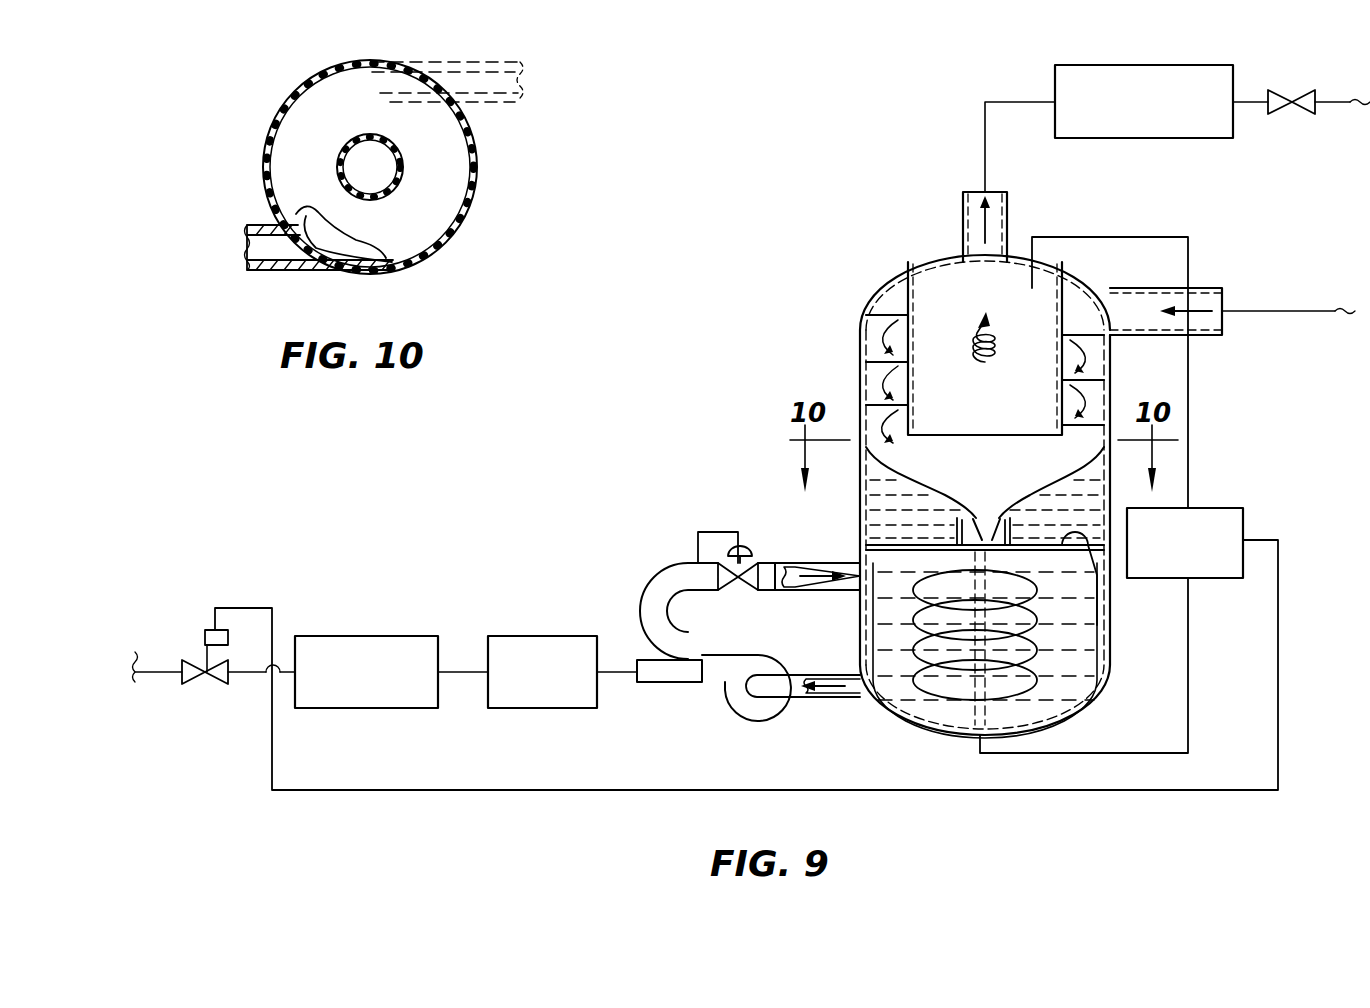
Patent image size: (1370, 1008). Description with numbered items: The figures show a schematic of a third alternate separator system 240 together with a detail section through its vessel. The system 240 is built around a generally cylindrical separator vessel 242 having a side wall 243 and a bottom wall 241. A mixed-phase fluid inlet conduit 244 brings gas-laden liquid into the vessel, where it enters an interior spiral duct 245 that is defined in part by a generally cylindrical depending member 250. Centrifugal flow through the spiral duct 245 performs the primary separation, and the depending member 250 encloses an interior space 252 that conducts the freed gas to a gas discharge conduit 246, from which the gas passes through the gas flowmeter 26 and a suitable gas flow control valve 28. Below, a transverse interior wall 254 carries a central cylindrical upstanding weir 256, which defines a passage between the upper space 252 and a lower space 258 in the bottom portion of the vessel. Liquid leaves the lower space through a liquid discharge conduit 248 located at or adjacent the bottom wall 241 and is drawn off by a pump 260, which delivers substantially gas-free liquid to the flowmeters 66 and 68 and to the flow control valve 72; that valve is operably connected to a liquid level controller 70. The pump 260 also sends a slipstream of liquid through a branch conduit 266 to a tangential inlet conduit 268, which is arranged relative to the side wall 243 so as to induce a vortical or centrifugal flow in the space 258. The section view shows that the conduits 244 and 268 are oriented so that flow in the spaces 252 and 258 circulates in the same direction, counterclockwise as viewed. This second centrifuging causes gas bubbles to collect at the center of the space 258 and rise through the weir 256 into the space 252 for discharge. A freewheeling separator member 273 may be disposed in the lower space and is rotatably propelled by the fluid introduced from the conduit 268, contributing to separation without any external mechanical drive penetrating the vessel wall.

In FIG. 9, the gas flowmeter 26 is at (1170, 140).
In FIG. 9, the gas flow control valve 28 is at (1290, 116).
In FIG. 9, the flowmeter 66 is at (540, 636).
In FIG. 9, the flowmeter 68 is at (366, 636).
In FIG. 9, the liquid level controller 70 is at (1246, 522).
In FIG. 9, the flow control valve 72 is at (210, 684).
In FIG. 9, the system 240 is at (1210, 256).
In FIG. 9, the bottom wall 241 is at (905, 738).
In FIG. 10, the separator vessel 242 is at (292, 92).
In FIG. 9, the separator vessel 242 is at (916, 262).
In FIG. 9, the side wall 243 is at (862, 352).
In FIG. 10, the mixed-phase fluid inlet conduit 244 is at (483, 104).
In FIG. 9, the mixed-phase fluid inlet conduit 244 is at (1214, 340).
In FIG. 9, the interior spiral duct 245 is at (878, 292).
In FIG. 9, the gas discharge conduit 246 is at (1012, 220).
In FIG. 9, the liquid discharge conduit 248 is at (832, 703).
In FIG. 9, the depending member 250 is at (916, 438).
In FIG. 9, the interior space 252 is at (1010, 406).
In FIG. 10, the transverse interior wall 254 is at (286, 216).
In FIG. 9, the transverse interior wall 254 is at (1112, 607).
In FIG. 10, the weir 256 is at (402, 178).
In FIG. 9, the weir 256 is at (950, 530).
In FIG. 10, the space 258 is at (374, 262).
In FIG. 9, the space 258 is at (1104, 627).
In FIG. 9, the pump 260 is at (722, 712).
In FIG. 9, the branch conduit 266 is at (682, 562).
In FIG. 10, the tangential inlet conduit 268 is at (246, 272).
In FIG. 9, the tangential inlet conduit 268 is at (826, 593).
In FIG. 9, the freewheeling separator member 273 is at (1110, 660).